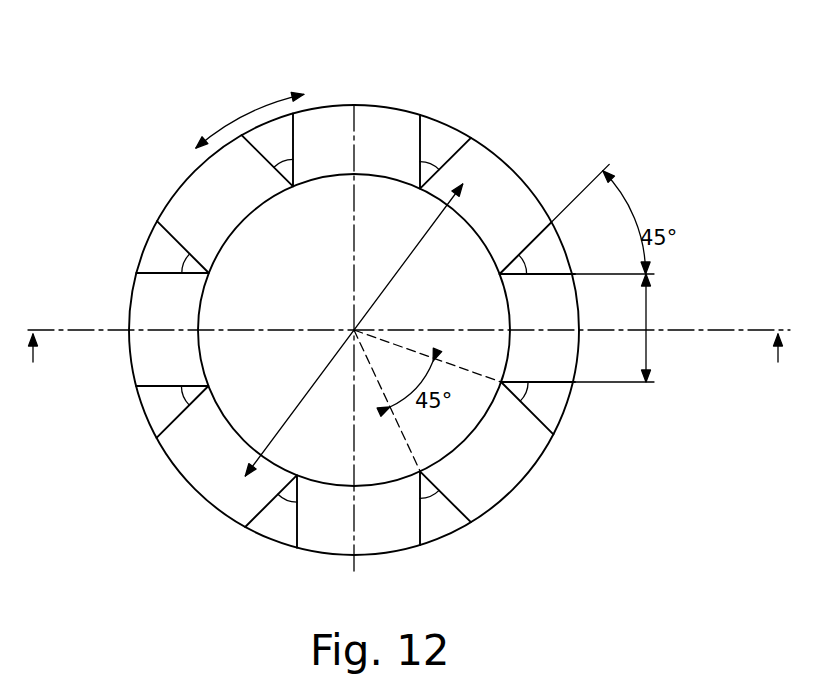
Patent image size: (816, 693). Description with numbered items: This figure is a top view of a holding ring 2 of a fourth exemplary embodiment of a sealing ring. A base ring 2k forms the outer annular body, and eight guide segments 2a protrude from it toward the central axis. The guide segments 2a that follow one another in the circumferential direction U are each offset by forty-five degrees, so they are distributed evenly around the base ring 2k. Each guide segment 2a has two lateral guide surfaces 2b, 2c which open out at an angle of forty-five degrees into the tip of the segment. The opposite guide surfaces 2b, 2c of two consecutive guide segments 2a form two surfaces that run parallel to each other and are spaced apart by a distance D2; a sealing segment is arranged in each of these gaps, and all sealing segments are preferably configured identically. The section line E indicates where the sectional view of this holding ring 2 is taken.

The holding ring 2 is at (376, 325).
The guide segment 2a is at (290, 168).
The lateral guide surface 2b is at (552, 277).
The lateral guide surface 2c is at (552, 380).
The base ring 2k is at (505, 482).
The distance D2 is at (648, 352).
The circumferential direction u is at (245, 112).
The section line E- E is at (405, 362).